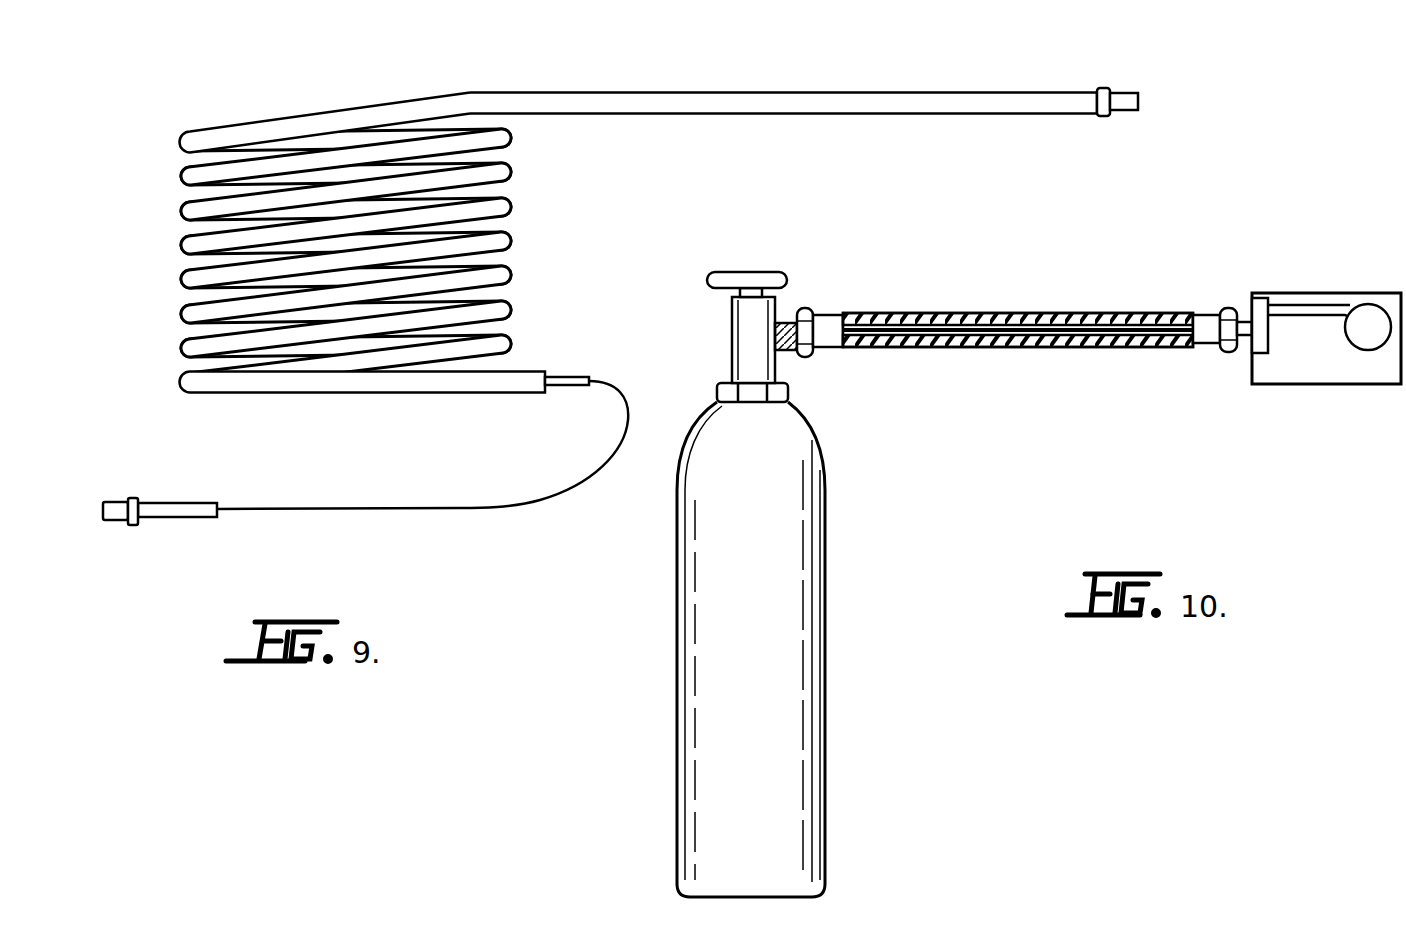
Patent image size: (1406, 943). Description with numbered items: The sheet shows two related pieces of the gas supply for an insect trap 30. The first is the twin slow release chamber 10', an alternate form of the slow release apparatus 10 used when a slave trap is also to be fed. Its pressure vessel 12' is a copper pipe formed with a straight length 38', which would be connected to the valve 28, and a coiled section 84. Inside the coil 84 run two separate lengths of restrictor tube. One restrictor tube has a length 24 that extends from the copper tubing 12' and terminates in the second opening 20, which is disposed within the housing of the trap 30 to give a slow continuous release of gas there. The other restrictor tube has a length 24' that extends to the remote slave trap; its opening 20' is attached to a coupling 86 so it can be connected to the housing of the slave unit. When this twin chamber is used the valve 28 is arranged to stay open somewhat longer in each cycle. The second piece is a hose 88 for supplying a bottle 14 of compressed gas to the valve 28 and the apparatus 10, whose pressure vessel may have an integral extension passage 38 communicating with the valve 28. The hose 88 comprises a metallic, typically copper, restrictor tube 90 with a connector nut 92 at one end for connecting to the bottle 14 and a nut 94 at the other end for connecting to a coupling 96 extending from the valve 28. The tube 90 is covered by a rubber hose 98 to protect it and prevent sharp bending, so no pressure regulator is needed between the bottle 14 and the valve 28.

In FIG. 9, the twin slow release chamber 10' is at (325, 100).
In FIG. 9, the pressure vessel 12' is at (783, 65).
In FIG. 9, the straight length 38' is at (1055, 66).
In FIG. 9, the coiled section 84 is at (188, 243).
In FIG. 9, the length of restrictor tube 24 is at (382, 341).
In FIG. 9, the second opening 20 is at (601, 337).
In FIG. 9, the length of restrictor tube 24' is at (422, 445).
In FIG. 9, the opening 20' is at (201, 477).
In FIG. 9, the coupling 86 is at (130, 500).
In FIG. 10, the bottle of compressed gas 14 is at (827, 476).
In FIG. 10, the connector nut 92 is at (808, 310).
In FIG. 10, the rubber hose 98 is at (950, 311).
In FIG. 10, the hose 88 is at (1079, 308).
In FIG. 10, the restrictor tube 90 is at (1073, 336).
In FIG. 10, the coupling 96 is at (1232, 312).
In FIG. 10, the nut 94 is at (1225, 353).
In FIG. 10, the valve 28 is at (1260, 297).
In FIG. 10, the extension passage 38 is at (1309, 267).
In FIG. 10, the insect trap 30 is at (1378, 288).
In FIG. 10, the apparatus 10 is at (1363, 380).